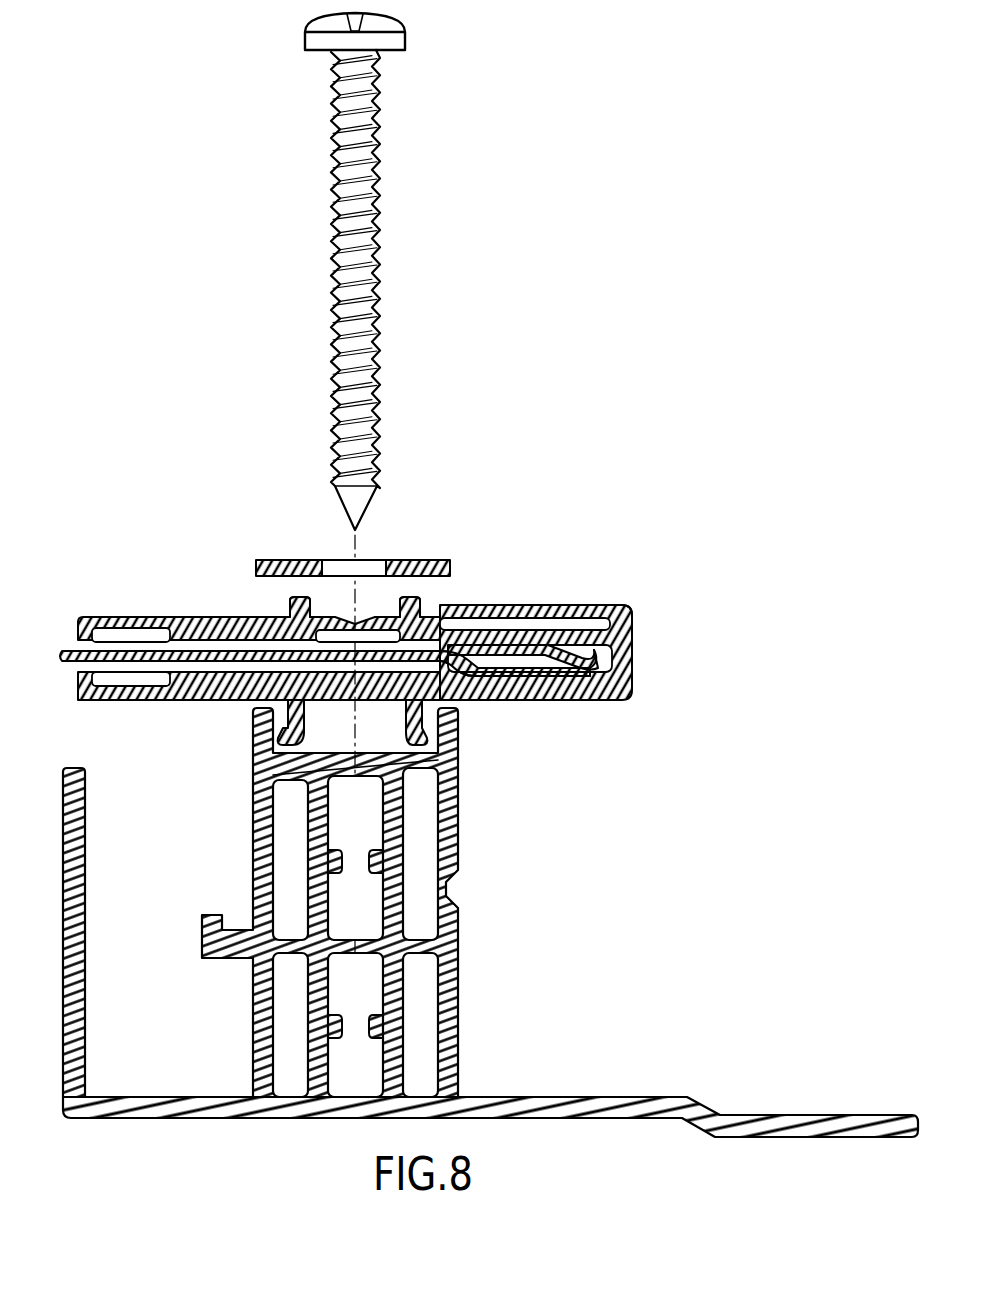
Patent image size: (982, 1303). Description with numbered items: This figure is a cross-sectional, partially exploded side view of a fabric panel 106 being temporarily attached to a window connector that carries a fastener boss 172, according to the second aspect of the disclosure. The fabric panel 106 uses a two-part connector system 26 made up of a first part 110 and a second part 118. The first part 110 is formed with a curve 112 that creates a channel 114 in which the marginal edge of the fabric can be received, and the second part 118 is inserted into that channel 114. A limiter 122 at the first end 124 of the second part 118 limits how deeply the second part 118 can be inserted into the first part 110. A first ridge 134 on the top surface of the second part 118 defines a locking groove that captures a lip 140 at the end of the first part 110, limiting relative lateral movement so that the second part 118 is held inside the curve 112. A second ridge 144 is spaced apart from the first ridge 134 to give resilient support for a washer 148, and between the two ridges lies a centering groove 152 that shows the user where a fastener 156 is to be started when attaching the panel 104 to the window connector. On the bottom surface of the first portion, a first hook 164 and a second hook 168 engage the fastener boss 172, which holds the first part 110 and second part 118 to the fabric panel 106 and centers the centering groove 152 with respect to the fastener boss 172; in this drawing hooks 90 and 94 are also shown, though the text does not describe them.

The connector system 26 is at (100, 690).
The first hook 90 is at (282, 720).
The second hook 94 is at (432, 716).
The panel 104 is at (299, 637).
The fabric panel 106 is at (572, 656).
The first part 110 is at (112, 690).
The curve 112 is at (627, 616).
The channel 114 is at (572, 638).
The second part 118 is at (150, 617).
The limiter 122 is at (552, 670).
The first end 124 is at (580, 662).
The first ridge 134 is at (410, 598).
The lip 140 is at (437, 605).
The second ridge 144 is at (297, 602).
The washer 148 is at (432, 566).
The centering groove 152 is at (350, 623).
The fastener 156 is at (366, 296).
The first hook 164 is at (295, 765).
The second hook 168 is at (433, 770).
The fastener boss 172 is at (490, 922).